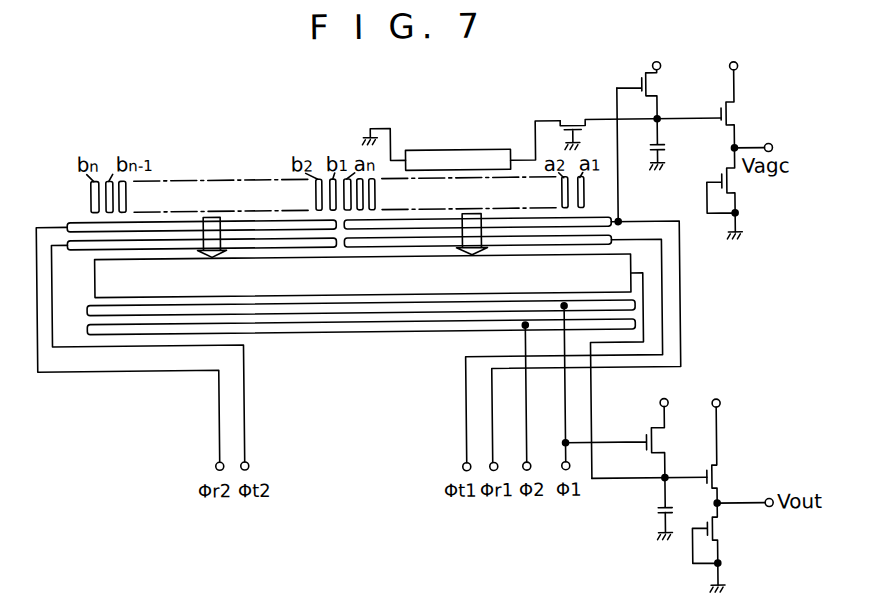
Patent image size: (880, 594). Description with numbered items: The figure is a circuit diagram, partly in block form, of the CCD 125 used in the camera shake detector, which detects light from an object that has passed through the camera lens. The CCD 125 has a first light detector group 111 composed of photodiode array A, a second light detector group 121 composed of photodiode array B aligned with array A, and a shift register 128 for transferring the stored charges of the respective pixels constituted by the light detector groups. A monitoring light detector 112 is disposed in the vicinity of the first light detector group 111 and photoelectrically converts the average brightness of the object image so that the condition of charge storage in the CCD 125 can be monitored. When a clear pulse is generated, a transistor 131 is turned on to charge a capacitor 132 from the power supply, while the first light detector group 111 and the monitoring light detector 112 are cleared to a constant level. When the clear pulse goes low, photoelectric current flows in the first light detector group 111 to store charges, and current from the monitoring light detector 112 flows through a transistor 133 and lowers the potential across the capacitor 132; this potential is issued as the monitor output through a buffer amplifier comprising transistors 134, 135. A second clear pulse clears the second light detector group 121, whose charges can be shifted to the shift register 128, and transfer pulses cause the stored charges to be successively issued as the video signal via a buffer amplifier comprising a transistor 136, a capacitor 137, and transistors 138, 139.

The first light detector group 111 is at (522, 182).
The monitoring light detector 112 is at (436, 155).
The second light detector group 121 is at (212, 185).
The CCD 125 is at (76, 196).
The shift register 128 is at (97, 284).
The transistor 131 is at (643, 82).
The capacitor 132 is at (671, 149).
The transistor 133 is at (572, 121).
The transistor 134 is at (737, 116).
The transistor 135 is at (737, 188).
The transistor 136 is at (647, 433).
The capacitor 137 is at (652, 512).
The transistor 138 is at (717, 478).
The transistor 139 is at (718, 532).